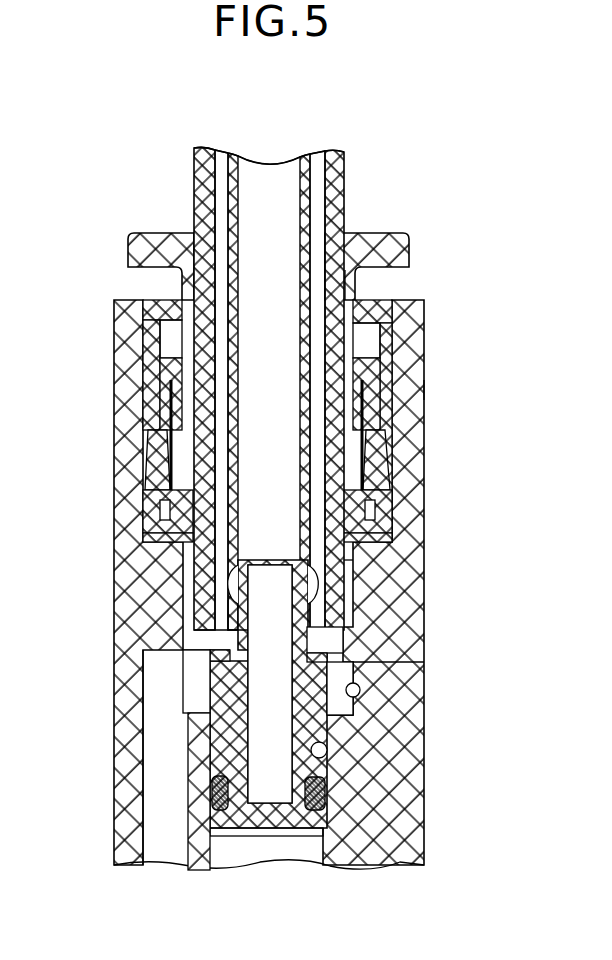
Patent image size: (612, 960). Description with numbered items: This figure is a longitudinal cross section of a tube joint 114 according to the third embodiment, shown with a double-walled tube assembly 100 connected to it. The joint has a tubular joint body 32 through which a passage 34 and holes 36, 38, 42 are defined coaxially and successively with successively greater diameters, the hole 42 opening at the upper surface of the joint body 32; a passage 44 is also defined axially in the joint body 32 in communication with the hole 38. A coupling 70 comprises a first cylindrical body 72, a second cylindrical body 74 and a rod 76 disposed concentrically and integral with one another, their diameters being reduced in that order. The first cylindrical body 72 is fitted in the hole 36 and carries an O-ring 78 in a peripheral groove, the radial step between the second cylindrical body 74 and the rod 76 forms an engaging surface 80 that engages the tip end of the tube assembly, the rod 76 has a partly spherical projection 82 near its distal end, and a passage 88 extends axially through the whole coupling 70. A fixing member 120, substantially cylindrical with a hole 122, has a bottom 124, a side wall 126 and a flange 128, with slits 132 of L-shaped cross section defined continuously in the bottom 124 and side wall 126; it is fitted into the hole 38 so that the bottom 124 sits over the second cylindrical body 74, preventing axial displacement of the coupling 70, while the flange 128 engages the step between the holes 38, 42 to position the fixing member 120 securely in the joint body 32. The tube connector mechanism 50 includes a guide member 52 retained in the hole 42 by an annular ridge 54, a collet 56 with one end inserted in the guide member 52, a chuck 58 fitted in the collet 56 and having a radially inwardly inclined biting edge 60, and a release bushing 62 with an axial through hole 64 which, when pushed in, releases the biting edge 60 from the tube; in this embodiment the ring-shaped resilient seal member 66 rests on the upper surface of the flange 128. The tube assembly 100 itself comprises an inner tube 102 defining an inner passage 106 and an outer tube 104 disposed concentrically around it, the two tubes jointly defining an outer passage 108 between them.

The double-walled tube assembly 100 is at (192, 155).
The outer tube 104 is at (205, 165).
The inner tube 102 is at (234, 168).
The inner passage 106 is at (268, 176).
The outer passage 108 is at (317, 168).
The axial through hole 64 is at (170, 250).
The tube connector mechanism 50 is at (406, 236).
The release bushing 62 is at (362, 252).
The tubular joint body 32 is at (112, 356).
The hole 42 is at (423, 336).
The guide member 52 is at (372, 302).
The annular ridge 54 is at (388, 360).
The collet 56 is at (386, 396).
The chuck 58 is at (384, 436).
The biting edge 60 is at (372, 476).
The seal member 66 is at (366, 532).
The flange 128 is at (365, 562).
The tube joint 114 is at (506, 389).
The fixing member 120 is at (365, 566).
The spherical projection 82 is at (232, 590).
The hole 122 is at (295, 586).
The rod 76 is at (228, 607).
The engaging surface 80 is at (236, 628).
The second cylindrical body 74 is at (220, 655).
The side wall 126 is at (332, 640).
The bottom 124 is at (322, 657).
The slits 132 is at (345, 688).
The hole 38 is at (358, 693).
The hole 36 is at (324, 752).
The passage 88 is at (170, 749).
The coupling 70 is at (206, 770).
The first cylindrical body 72 is at (218, 804).
The O-ring 78 is at (324, 795).
The passage 44 is at (170, 838).
The passage 34 is at (286, 843).